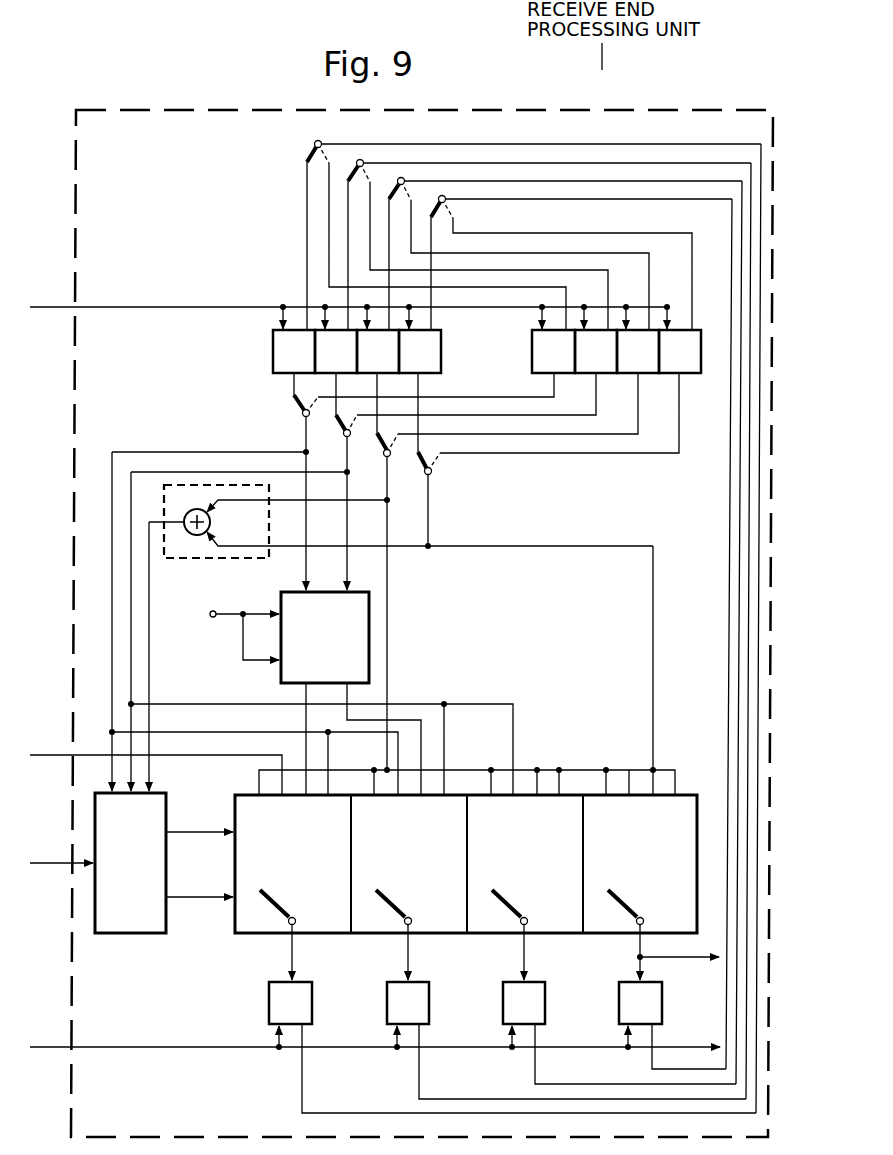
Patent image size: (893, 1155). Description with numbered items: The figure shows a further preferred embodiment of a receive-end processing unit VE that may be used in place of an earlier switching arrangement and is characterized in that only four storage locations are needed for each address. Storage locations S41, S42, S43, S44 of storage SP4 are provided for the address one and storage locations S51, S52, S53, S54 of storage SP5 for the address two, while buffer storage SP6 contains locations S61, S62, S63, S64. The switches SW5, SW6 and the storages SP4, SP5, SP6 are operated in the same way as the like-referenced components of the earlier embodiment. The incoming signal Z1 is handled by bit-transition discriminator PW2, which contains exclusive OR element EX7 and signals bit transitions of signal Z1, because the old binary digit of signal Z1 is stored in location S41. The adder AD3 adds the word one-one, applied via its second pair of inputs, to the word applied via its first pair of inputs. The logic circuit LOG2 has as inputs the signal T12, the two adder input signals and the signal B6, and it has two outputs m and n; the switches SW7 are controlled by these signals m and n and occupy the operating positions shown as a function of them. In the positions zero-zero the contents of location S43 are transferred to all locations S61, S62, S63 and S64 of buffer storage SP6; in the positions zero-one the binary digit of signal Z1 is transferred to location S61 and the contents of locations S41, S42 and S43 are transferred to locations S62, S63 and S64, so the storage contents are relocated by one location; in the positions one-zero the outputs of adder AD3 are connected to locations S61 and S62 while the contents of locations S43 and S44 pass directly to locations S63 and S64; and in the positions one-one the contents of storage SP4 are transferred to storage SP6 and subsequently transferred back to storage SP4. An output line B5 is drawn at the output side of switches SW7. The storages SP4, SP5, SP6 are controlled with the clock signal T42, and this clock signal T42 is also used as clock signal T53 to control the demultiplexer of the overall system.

The receive-end processing unit VE is at (585, 110).
The switches SW5 is at (495, 627).
The switches SW6 is at (453, 571).
The switches SW7 is at (258, 937).
The storage SP4 is at (253, 367).
The storage SP5 is at (521, 367).
The buffer storage SP6 is at (263, 1017).
The storage location S41 is at (294, 351).
The storage location S42 is at (336, 351).
The storage location S43 is at (378, 351).
The storage location S44 is at (420, 351).
The storage location S51 is at (553, 351).
The storage location S52 is at (596, 351).
The storage location S53 is at (638, 351).
The storage location S54 is at (680, 351).
The storage location S61 is at (512, 1047).
The storage location S62 is at (566, 1040).
The storage location S63 is at (619, 1033).
The storage location S64 is at (672, 1025).
The exclusive OR element EX7 is at (401, 523).
The bit-transition discriminator PW2 is at (203, 562).
The adder AD3 is at (308, 605).
The logic circuit LOG2 is at (304, 692).
The signal B6 is at (162, 656).
The signal B5 is at (673, 958).
The signal Z1 is at (156, 757).
The signal T12 is at (61, 846).
The clock signal T42 is at (375, 659).
The clock signal T53 is at (680, 1046).